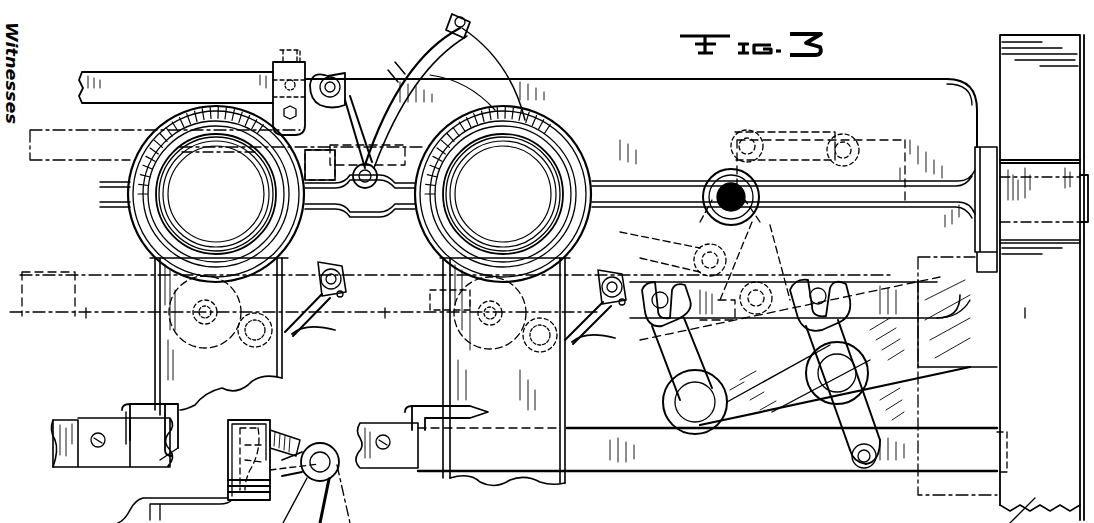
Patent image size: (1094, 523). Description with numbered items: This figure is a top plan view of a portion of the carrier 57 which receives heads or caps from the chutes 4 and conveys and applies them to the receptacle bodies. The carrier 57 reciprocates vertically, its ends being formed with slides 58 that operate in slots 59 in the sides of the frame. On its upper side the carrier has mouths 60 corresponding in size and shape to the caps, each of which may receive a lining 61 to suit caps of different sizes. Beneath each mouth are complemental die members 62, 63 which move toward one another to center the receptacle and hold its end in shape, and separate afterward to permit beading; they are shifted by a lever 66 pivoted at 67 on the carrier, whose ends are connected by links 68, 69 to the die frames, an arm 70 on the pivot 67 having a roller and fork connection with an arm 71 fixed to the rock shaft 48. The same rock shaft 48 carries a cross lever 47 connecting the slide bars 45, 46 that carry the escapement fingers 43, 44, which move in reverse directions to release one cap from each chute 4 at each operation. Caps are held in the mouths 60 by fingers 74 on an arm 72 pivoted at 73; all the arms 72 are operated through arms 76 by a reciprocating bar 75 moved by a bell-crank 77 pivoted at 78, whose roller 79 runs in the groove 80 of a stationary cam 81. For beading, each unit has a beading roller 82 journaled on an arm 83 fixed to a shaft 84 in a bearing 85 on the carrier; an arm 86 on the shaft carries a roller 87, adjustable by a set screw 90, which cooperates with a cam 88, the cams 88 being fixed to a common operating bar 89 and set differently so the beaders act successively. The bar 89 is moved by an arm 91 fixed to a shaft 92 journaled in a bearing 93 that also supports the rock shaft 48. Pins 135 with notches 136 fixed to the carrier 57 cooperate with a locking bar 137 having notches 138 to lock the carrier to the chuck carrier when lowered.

The chute 4 is at (155, 350).
The escapement finger 43 is at (134, 418).
The escapement finger 44 is at (86, 316).
The slide bar 45 is at (72, 450).
The slide bar 46 is at (22, 316).
The cross lever 47 is at (868, 405).
The rock shaft 48 is at (815, 380).
The carrier 57 is at (622, 86).
The slide 58 is at (1028, 180).
The slot 59 is at (1034, 245).
The mouth 60 is at (152, 240).
The lining 61 is at (150, 212).
The die member 62 is at (165, 222).
The die member 63 is at (268, 228).
The lever 66 is at (738, 142).
The pivot 67 is at (715, 175).
The link 68 is at (792, 134).
The link 69 is at (695, 250).
The arm 70 is at (760, 258).
The arm 71 is at (758, 318).
The arm 72 is at (393, 68).
The pivot 73 is at (370, 190).
The finger 74 is at (443, 96).
The reciprocating bar 75 is at (213, 80).
The arm 76 is at (352, 76).
The bell-crank 77 is at (300, 512).
The pivot 78 is at (322, 454).
The roller 79 is at (286, 436).
The cam groove 80 is at (250, 438).
The cam 81 is at (228, 466).
The beading roller 82 is at (205, 325).
The arm 83 is at (200, 320).
The shaft 84 is at (253, 347).
The bearing 85 is at (310, 318).
The arm 86 is at (304, 326).
The roller 87 is at (343, 274).
The cam 88 is at (322, 264).
The operating bar 89 is at (425, 320).
The set screw 90 is at (342, 300).
The arm 91 is at (660, 340).
The shaft 92 is at (678, 405).
The bearing 93 is at (940, 365).
The pin 135 is at (322, 180).
The notch 136 is at (310, 168).
The locking bar 137 is at (76, 165).
The notch 138 is at (219, 152).